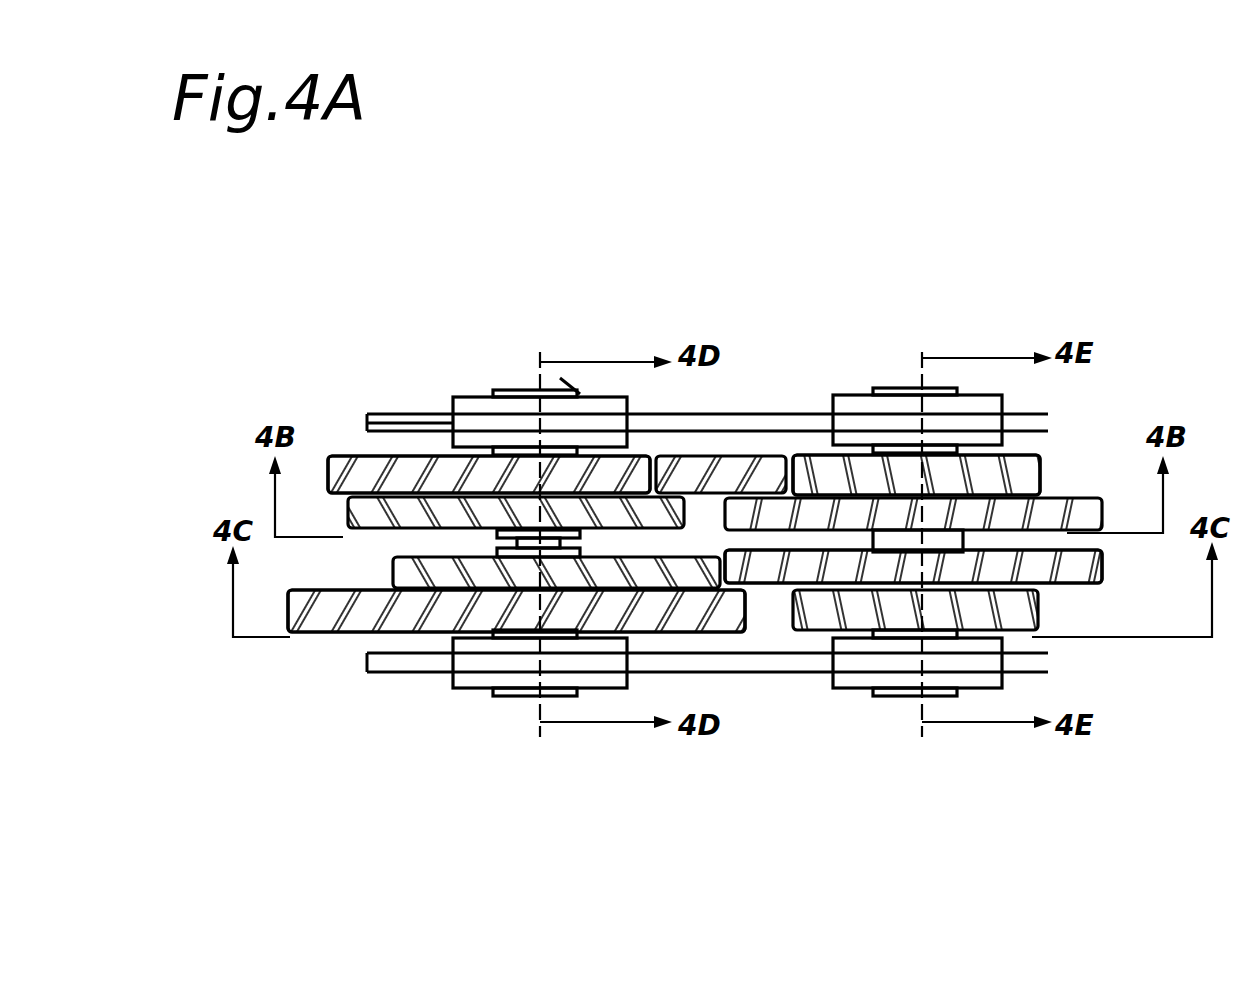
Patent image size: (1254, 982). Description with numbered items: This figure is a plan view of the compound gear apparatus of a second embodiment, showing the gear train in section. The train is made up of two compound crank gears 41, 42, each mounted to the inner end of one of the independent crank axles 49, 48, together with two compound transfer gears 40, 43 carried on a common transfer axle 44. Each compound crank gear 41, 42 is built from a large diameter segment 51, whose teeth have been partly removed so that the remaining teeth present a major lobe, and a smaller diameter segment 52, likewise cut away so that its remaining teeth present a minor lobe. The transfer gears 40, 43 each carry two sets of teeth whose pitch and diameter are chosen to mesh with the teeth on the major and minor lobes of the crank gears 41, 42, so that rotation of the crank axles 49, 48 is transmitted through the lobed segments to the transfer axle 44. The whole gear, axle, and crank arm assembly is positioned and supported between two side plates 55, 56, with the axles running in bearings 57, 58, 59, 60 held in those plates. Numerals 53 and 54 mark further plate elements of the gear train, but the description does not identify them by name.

The compound transfer gear 40 is at (1078, 584).
The compound crank gear 41 is at (437, 615).
The compound crank gear 42 is at (372, 431).
The compound transfer gear 43 is at (1053, 494).
The transfer axle 44 is at (908, 540).
The crank axle 48 is at (518, 446).
The crank axle 49 is at (523, 640).
The large diameter segment 51 is at (403, 467).
The smaller diameter segment 52 is at (388, 510).
The clutch plate 53 is at (977, 470).
The clutch plate 54 is at (1060, 512).
The side plate 55 is at (767, 417).
The side plate 56 is at (775, 668).
The bearing 57 is at (470, 403).
The bearing 58 is at (483, 684).
The bearing 59 is at (850, 399).
The bearing 60 is at (858, 684).